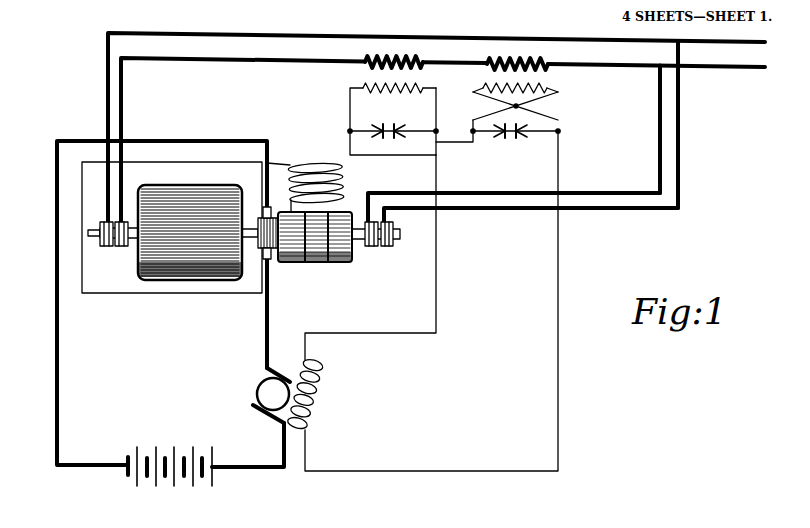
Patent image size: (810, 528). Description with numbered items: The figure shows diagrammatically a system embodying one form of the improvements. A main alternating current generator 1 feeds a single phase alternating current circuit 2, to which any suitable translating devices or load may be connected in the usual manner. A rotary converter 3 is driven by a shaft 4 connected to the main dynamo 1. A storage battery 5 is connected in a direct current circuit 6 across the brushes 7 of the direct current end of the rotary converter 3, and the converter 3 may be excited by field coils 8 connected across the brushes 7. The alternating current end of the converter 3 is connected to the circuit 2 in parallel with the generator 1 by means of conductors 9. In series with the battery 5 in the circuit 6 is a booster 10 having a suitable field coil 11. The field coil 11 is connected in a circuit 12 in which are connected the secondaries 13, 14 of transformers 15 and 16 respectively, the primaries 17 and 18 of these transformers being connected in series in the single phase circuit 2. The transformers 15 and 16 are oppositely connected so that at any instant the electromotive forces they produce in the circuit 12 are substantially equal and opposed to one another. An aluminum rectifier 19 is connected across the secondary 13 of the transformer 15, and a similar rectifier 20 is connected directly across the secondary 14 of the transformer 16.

The main alternating current generator 1 is at (172, 282).
The single phase alternating current circuit 2 is at (281, 34).
The rotary converter 3 is at (338, 264).
The shaft 4 is at (252, 242).
The storage battery 5 is at (177, 480).
The direct current circuit 6 is at (57, 348).
The brushes 7 is at (266, 208).
The field coils 8 is at (346, 182).
The conductors 9 is at (605, 192).
The booster 10 is at (257, 389).
The field coil 11 is at (318, 400).
The circuit 12 is at (436, 283).
The secondary 13 is at (393, 121).
The secondary 14 is at (552, 92).
The transformer 15 is at (382, 80).
The transformer 16 is at (499, 82).
The primary 17 is at (389, 55).
The primary 18 is at (512, 57).
The aluminum rectifier 19 is at (378, 134).
The rectifier 20 is at (522, 137).